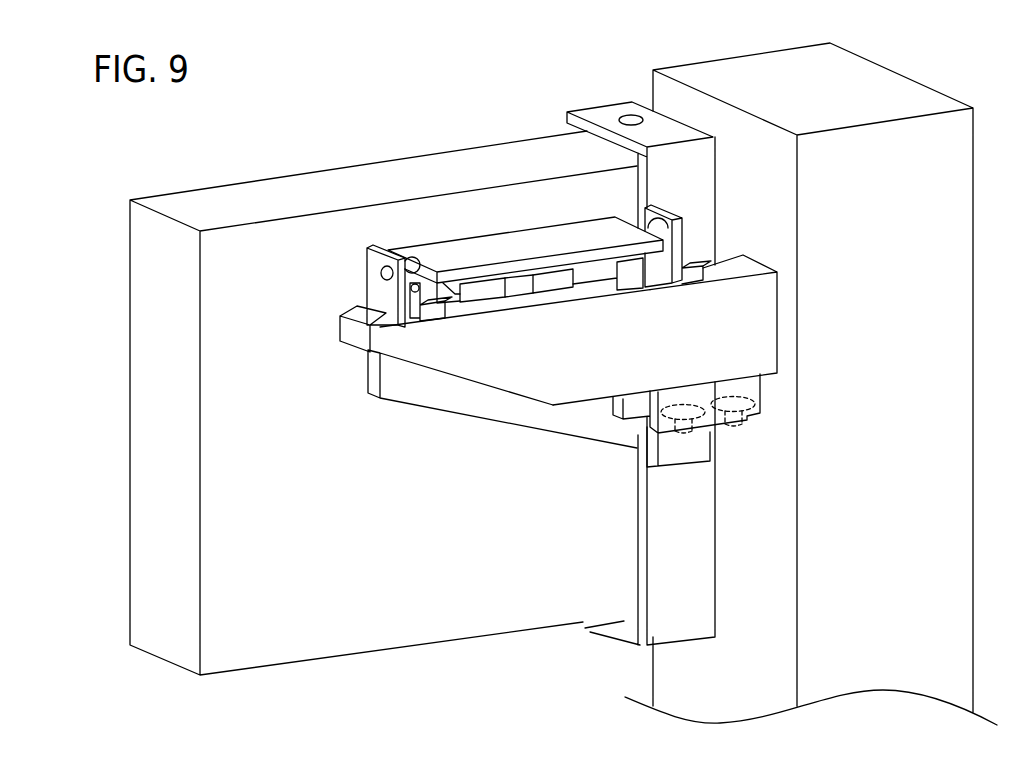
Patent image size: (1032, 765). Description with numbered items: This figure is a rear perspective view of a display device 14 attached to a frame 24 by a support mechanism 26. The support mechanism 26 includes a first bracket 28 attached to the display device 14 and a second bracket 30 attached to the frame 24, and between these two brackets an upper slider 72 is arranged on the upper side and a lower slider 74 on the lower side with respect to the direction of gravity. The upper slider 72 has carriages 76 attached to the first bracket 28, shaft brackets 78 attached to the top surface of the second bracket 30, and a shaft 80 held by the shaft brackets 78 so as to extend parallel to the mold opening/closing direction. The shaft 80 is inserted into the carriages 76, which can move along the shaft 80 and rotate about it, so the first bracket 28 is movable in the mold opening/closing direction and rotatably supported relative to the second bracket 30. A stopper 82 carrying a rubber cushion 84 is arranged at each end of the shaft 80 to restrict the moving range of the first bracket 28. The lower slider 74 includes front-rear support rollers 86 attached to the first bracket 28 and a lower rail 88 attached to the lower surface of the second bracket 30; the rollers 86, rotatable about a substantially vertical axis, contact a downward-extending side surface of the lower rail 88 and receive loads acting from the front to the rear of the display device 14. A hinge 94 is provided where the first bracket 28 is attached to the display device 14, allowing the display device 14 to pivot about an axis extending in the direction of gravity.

The display device 14 is at (160, 308).
The frame 24 is at (965, 185).
The support mechanism 26 is at (338, 383).
The first bracket 28 is at (664, 359).
The second bracket 30 is at (491, 376).
The upper slider 72 is at (344, 254).
The lower slider 74 is at (774, 387).
The carriages 76 is at (480, 292).
The shaft brackets 78 is at (418, 316).
The shaft 80 is at (537, 278).
The stopper 82 is at (368, 293).
The rubber cushion 84 is at (420, 262).
The front-rear support rollers 86 is at (743, 403).
The lower rail 88 is at (643, 395).
The hinge 94 is at (627, 114).